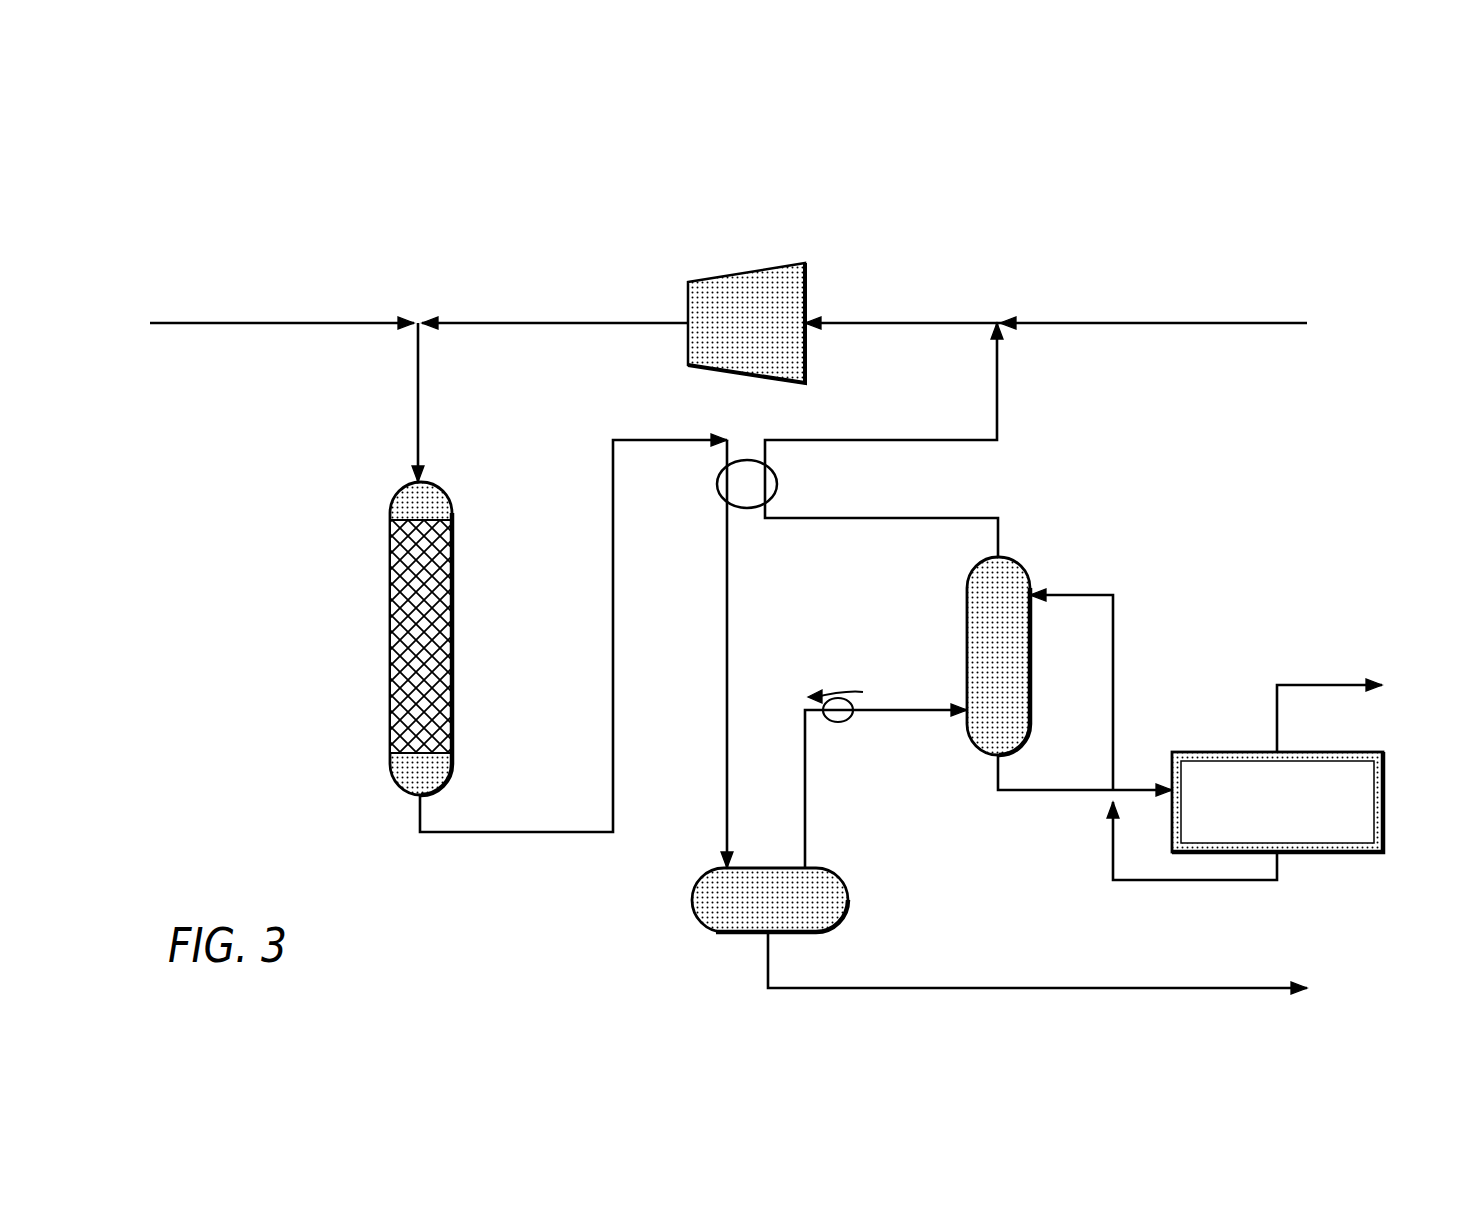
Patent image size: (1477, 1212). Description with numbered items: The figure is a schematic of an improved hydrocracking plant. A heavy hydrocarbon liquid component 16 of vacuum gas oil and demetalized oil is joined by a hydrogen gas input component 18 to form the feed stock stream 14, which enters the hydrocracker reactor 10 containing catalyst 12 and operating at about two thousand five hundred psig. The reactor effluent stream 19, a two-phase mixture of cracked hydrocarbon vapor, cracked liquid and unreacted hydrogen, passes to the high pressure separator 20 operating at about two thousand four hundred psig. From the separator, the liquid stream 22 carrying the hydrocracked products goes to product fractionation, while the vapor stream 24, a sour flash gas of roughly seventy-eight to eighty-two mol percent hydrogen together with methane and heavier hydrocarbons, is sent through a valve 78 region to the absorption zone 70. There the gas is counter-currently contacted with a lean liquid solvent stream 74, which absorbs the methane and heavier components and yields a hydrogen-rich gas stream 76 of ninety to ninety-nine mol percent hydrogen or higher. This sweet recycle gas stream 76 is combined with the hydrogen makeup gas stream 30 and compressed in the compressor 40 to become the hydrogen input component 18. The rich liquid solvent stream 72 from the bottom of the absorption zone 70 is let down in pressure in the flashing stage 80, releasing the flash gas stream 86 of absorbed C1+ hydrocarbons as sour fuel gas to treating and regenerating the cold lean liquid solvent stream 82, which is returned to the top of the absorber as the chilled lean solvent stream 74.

The hydrocracker reactor 10 is at (336, 503).
The catalyst 12 is at (390, 632).
The feed stock stream 14 is at (418, 390).
The heavy hydrocarbon liquid component 16 is at (237, 325).
The hydrogen gas input component 18 is at (512, 322).
The reactor effluent stream 19 is at (425, 822).
The high pressure separator 20 is at (692, 901).
The liquid stream 22 is at (1040, 985).
The vapor stream 24 is at (805, 770).
The makeup gas stream 30 is at (1262, 322).
The compressor 40 is at (777, 262).
The absorption zone 70 is at (967, 638).
The rich liquid solvent stream 72 is at (1012, 793).
The lean liquid solvent stream 74 is at (1072, 592).
The hydrogen-rich gas stream 76 is at (997, 385).
The pressure control valve 78 is at (745, 510).
The flashing stage 80 is at (1383, 778).
The lean liquid solvent stream 82 is at (1277, 865).
The flash gas stream 86 is at (1277, 703).